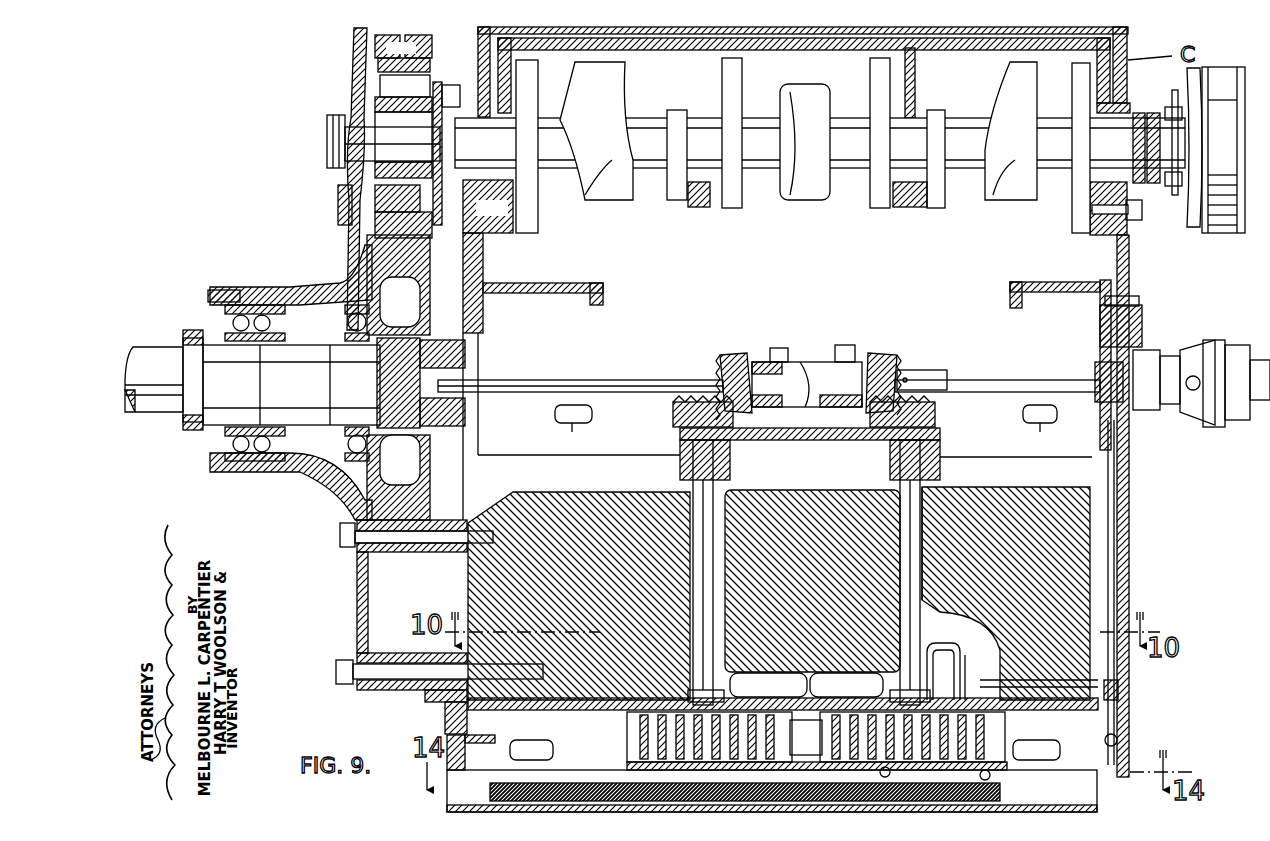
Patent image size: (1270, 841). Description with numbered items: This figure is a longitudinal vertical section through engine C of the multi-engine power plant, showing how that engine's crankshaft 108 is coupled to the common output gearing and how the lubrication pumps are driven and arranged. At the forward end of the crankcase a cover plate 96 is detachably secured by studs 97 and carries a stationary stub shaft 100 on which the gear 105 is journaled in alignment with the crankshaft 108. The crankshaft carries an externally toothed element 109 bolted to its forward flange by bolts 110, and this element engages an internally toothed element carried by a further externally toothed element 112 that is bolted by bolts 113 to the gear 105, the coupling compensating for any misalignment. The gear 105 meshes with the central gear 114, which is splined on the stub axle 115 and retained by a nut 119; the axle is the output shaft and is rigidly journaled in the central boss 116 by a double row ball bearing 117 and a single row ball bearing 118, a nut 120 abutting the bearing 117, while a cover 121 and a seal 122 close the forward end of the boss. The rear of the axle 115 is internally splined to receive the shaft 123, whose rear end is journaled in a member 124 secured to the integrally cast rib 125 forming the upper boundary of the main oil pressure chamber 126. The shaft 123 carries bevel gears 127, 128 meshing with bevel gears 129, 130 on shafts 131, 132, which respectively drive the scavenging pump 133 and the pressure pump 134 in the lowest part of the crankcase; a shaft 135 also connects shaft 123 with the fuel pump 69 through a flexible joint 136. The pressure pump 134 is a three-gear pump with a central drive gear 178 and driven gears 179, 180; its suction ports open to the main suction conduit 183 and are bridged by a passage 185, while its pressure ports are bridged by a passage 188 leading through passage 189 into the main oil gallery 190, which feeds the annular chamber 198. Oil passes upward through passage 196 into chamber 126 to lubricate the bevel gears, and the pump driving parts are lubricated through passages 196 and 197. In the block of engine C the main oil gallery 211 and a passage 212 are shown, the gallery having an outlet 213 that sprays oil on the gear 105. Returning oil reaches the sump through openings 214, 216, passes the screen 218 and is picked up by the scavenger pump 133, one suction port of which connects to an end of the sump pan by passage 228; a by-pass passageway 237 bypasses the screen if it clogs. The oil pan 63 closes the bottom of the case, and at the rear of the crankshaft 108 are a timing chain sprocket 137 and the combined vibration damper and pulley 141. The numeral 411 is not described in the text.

The oil pan 63 is at (475, 772).
The fuel pump 69 is at (1230, 350).
The cover plate 96 is at (357, 600).
The studs 97 is at (340, 536).
The stub shaft 100 is at (335, 143).
The gear 105 is at (353, 62).
The crankshaft 108 is at (762, 212).
The externally toothed element 109 is at (440, 228).
The bolts 110 is at (440, 92).
The externally toothed element 112 is at (403, 53).
The bolts 113 is at (403, 94).
The central gear 114 is at (382, 268).
The stub axle 115 is at (292, 465).
The central boss 116 is at (278, 286).
The double row ball bearing 117 is at (266, 396).
The single row ball bearing 118 is at (352, 440).
The nut 119 is at (482, 344).
The nut 120 is at (205, 432).
The cover 121 is at (208, 310).
The seal 122 is at (182, 338).
The shaft 123 is at (600, 378).
The member 124 is at (825, 362).
The rib 125 is at (938, 444).
The main oil pressure chamber 126 is at (802, 478).
The bevel gear 127 is at (735, 352).
The bevel gear 128 is at (880, 354).
The bevel gear 129 is at (673, 418).
The bevel gear 130 is at (936, 418).
The shaft 131 is at (692, 566).
The shaft 132 is at (932, 556).
The scavenging pump 133 is at (627, 732).
The pressure pump 134 is at (1003, 726).
The shaft 135 is at (1032, 380).
The flexible joint 136 is at (915, 370).
The timing chain sprocket 137 is at (1150, 112).
The combined vibration damper and pulley 141 is at (1222, 236).
The central drive gear 178 is at (968, 682).
The driven gear 179 is at (986, 780).
The driven gear 180 is at (830, 736).
The main suction conduit 183 is at (866, 684).
The passage 185 is at (985, 622).
The passage 188 is at (938, 622).
The passage 189 is at (1072, 682).
The main oil gallery 190 is at (1114, 590).
The passage 196 is at (925, 520).
The passage 197 is at (716, 588).
The annular chamber 198 is at (1135, 332).
The main oil gallery of engine C 211 is at (1122, 36).
The oil passage 212 is at (915, 74).
The outlet 213 is at (480, 42).
The opening 214 is at (572, 423).
The opening 216 is at (545, 730).
The screen 218 is at (626, 762).
The passage 228 is at (495, 806).
The by-pass passageway 237 is at (1035, 750).
The column 411 is at (440, 235).